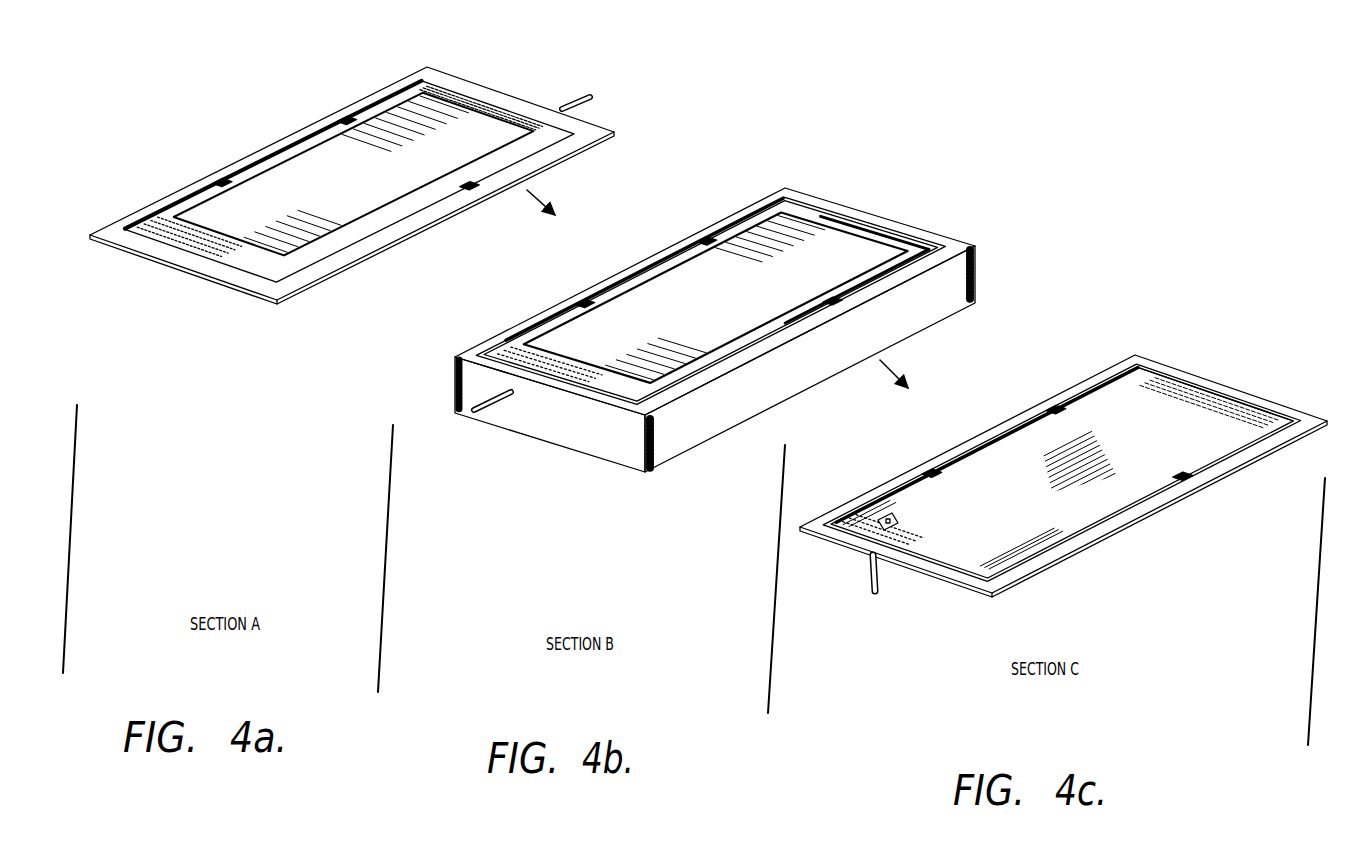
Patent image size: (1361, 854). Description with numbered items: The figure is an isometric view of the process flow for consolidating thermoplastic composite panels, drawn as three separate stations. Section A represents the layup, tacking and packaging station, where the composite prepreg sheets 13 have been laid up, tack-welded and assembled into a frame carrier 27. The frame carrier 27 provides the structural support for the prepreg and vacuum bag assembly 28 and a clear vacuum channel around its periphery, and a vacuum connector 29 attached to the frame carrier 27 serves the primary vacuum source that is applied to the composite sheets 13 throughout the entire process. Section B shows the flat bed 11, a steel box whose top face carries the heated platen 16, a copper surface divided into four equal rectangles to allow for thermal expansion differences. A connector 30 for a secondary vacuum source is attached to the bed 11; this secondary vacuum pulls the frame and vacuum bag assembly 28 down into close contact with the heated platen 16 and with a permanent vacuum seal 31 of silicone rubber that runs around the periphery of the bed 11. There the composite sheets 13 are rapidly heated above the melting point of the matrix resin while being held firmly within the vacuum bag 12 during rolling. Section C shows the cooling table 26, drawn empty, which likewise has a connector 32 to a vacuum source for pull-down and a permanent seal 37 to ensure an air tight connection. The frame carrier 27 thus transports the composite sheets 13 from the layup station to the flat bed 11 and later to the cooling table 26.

In FIG. 4B, the flat bed 11 is at (613, 455).
In FIG. 4A, the vacuum bag 12 is at (338, 242).
In FIG. 4A, the composite sheets 13 is at (318, 153).
In FIG. 4B, the heated platen 16 is at (587, 327).
In FIG. 4C, the cooling table 26 is at (1028, 542).
In FIG. 4A, the frame carrier 27 is at (248, 91).
In FIG. 4A, the prepreg and vacuum bag assembly 28 is at (371, 185).
In FIG. 4A, the vacuum connector 29 is at (592, 97).
In FIG. 4B, the connector for secondary vacuum source 30 is at (488, 408).
In FIG. 4B, the permanent vacuum seal 31 is at (717, 227).
In FIG. 4C, the connector 32 is at (880, 590).
In FIG. 4C, the permanent seal 37 is at (1175, 486).